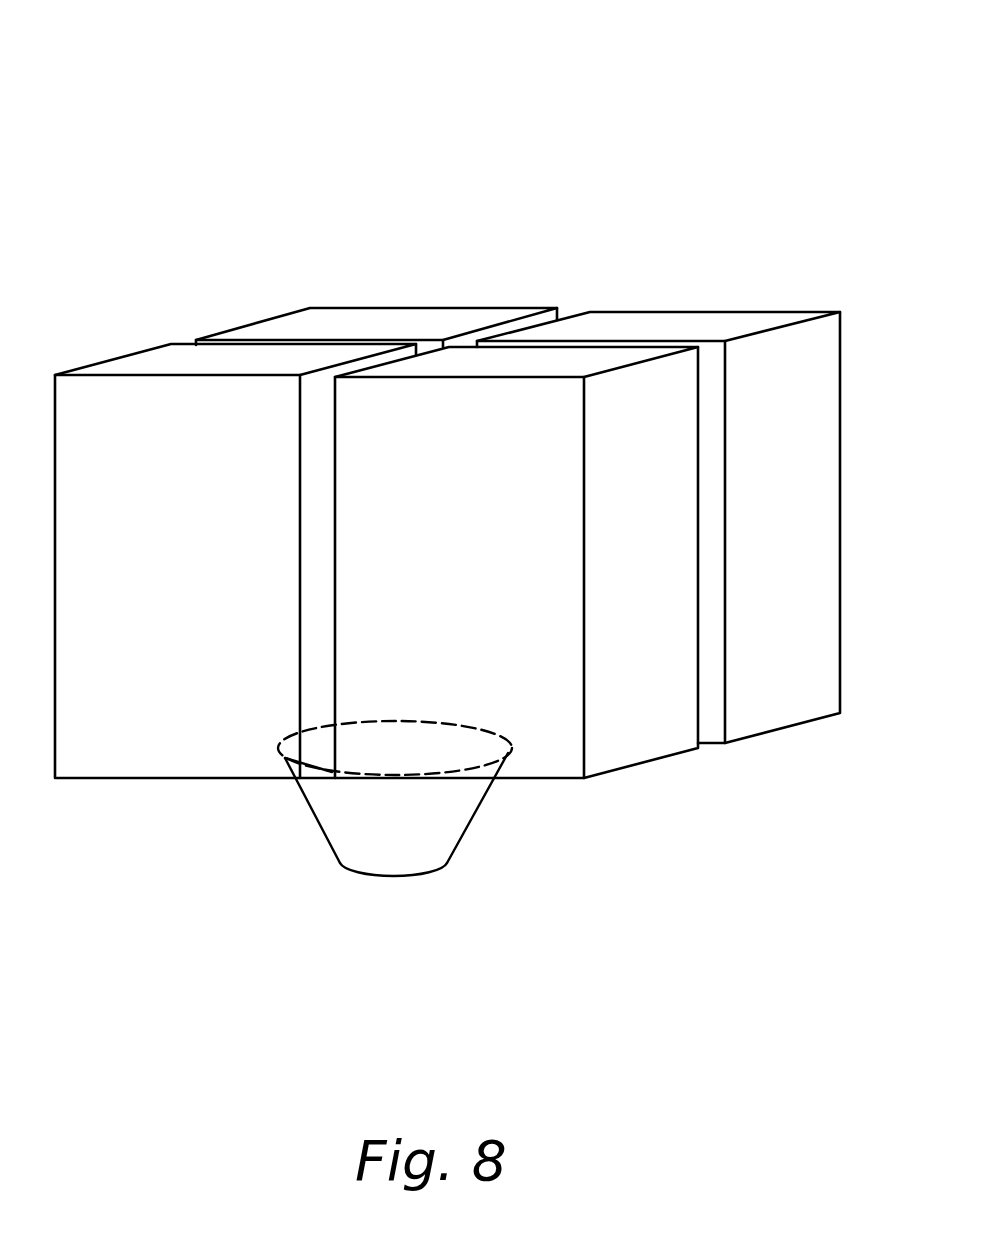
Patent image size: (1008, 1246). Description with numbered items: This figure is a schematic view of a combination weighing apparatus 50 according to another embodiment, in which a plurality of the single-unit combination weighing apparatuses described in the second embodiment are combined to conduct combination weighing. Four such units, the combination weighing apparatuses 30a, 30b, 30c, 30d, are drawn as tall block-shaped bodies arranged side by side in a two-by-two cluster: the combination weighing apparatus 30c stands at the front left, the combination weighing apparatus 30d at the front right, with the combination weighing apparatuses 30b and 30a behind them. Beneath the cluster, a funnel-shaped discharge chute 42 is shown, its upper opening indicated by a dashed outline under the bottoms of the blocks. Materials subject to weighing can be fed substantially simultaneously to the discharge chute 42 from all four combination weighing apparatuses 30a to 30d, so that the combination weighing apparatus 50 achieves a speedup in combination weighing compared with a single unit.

The combination weighing apparatus 50 is at (648, 138).
The combination weighing apparatus 30a is at (720, 325).
The combination weighing apparatus 30b is at (343, 323).
The combination weighing apparatus 30c is at (165, 365).
The combination weighing apparatus 30d is at (533, 370).
The discharge chute 42 is at (438, 842).